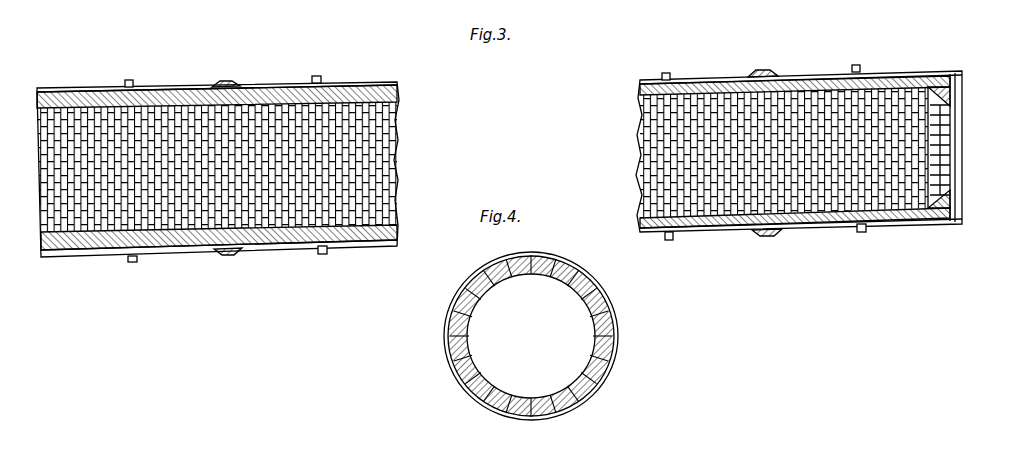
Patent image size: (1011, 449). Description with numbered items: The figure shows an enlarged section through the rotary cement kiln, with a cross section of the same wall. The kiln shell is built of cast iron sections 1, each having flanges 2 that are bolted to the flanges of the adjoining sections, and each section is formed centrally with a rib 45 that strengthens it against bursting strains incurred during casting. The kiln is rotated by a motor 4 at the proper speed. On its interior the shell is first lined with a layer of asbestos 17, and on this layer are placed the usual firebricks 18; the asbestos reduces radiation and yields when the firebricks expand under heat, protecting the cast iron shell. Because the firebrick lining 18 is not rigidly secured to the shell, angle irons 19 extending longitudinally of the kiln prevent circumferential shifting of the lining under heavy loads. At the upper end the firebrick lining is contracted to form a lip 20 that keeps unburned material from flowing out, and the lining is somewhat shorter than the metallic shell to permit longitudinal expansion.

In FIG. 3, the cast iron section 1 is at (482, 166).
In FIG. 3, the flange 2 is at (399, 71).
In FIG. 3, the motor 4 is at (293, 78).
In FIG. 3, the asbestos layer 17 is at (399, 83).
In FIG. 4, the asbestos layer 17 is at (592, 350).
In FIG. 3, the firebrick lining 18 is at (398, 241).
In FIG. 4, the firebrick lining 18 is at (550, 278).
In FIG. 4, the angle iron 19 is at (469, 352).
In FIG. 3, the lip 20 is at (964, 76).
In FIG. 3, the rib 45 is at (767, 244).